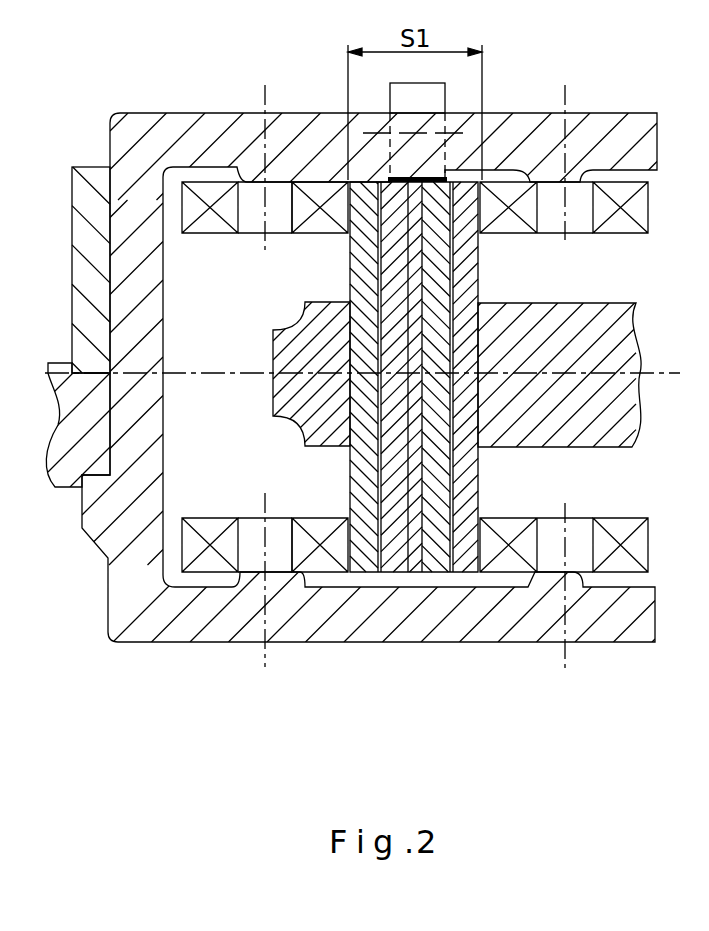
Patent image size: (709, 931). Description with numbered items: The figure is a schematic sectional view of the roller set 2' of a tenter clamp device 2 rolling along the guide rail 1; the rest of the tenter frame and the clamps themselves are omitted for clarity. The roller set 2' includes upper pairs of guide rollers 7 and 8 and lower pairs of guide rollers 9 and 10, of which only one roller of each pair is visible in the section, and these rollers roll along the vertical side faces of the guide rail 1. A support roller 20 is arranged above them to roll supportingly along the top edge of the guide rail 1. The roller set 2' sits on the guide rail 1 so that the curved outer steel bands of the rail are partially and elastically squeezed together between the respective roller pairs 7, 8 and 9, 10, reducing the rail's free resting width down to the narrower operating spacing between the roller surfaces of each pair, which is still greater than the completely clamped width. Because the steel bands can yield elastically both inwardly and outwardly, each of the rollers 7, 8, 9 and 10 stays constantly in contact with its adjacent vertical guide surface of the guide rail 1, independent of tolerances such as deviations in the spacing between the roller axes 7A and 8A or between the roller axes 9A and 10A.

The guide rail 1 is at (482, 470).
The tenter clamp device 2 is at (351, 445).
The roller set 2' is at (386, 691).
The upper pair of guide rollers 7 is at (207, 220).
The roller axis 7A is at (265, 250).
The upper pair of guide rollers 8 is at (640, 233).
The roller axis 8A is at (565, 240).
The lower pair of guide rollers 9 is at (207, 530).
The roller axis 9A is at (263, 495).
The lower pair of guide rollers 10 is at (623, 537).
The roller axis 10A is at (601, 490).
The support roller 20 is at (443, 92).